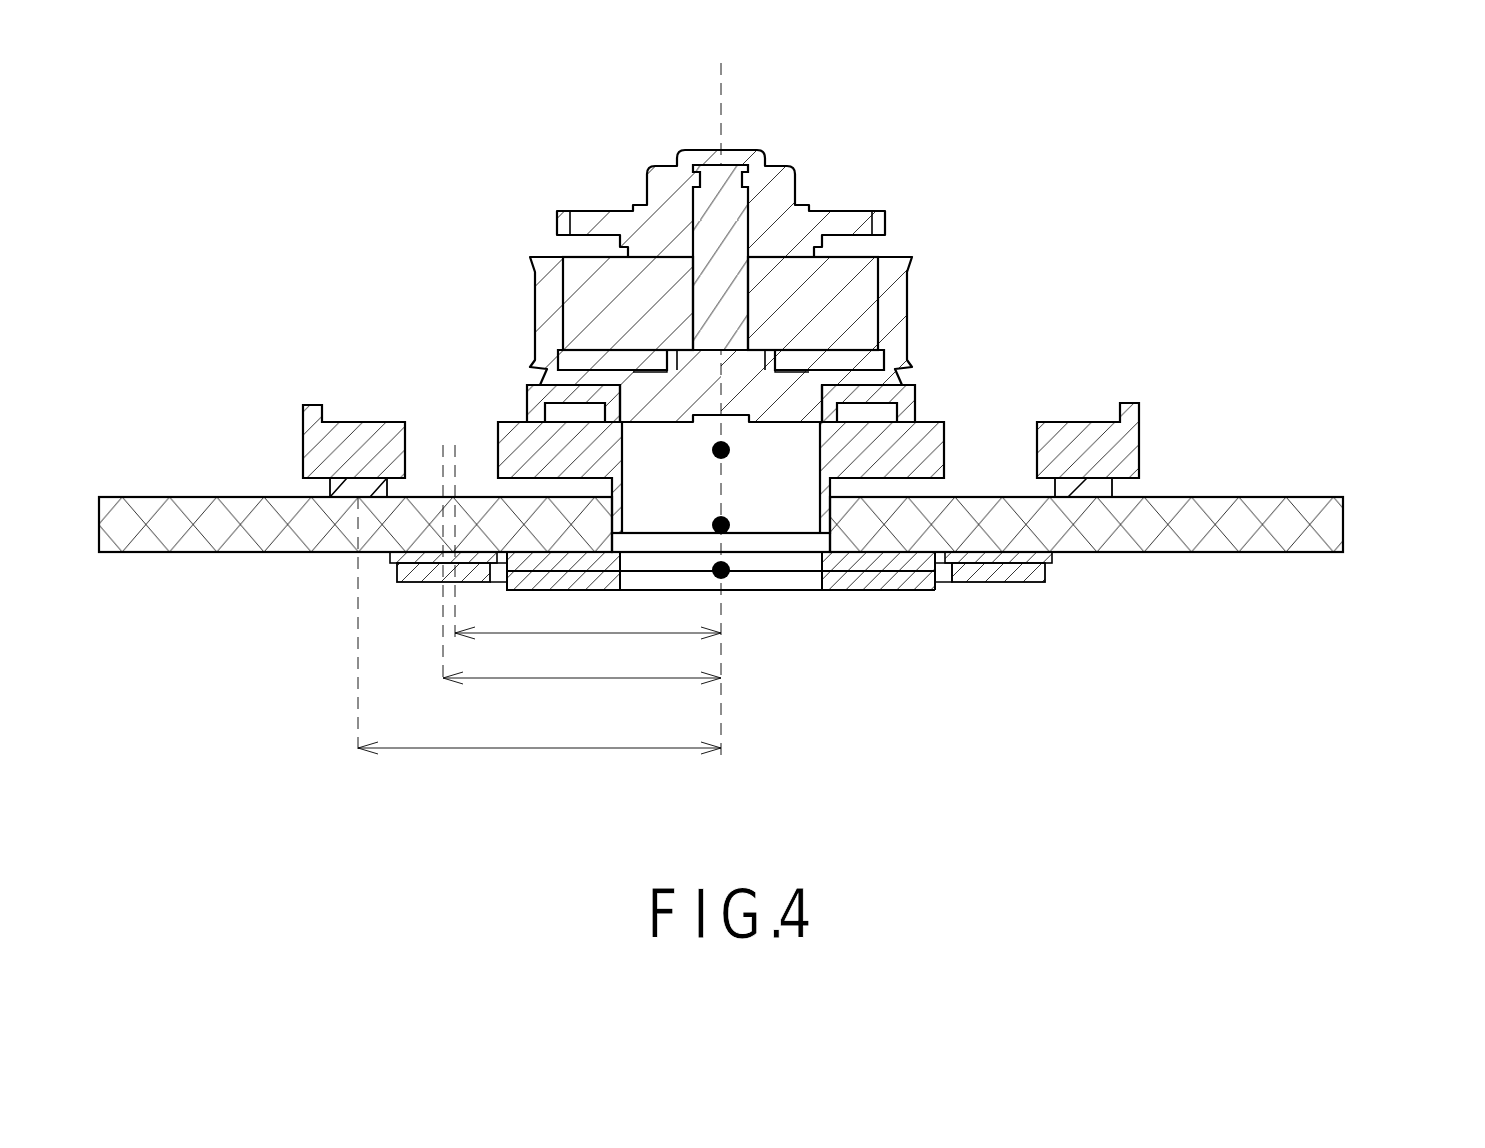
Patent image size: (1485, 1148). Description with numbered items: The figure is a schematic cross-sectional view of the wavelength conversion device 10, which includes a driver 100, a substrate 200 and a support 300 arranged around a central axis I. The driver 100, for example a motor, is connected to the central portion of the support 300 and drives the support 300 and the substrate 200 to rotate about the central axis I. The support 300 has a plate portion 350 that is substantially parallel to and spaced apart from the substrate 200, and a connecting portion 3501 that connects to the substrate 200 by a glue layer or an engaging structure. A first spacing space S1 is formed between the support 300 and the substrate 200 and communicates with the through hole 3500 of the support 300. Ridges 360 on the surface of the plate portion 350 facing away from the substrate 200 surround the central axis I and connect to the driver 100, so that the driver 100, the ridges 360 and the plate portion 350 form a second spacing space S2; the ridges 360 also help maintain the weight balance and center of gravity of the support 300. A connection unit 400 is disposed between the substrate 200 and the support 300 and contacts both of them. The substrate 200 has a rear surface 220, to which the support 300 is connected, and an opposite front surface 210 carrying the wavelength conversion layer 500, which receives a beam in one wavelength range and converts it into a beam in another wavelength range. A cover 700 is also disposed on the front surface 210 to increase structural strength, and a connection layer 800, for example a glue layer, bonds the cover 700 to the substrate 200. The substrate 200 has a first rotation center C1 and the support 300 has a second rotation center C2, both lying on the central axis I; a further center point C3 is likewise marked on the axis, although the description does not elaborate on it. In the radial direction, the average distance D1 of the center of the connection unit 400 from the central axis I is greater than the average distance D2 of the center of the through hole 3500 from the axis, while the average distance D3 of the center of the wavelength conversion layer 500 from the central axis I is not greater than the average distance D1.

The wavelength conversion device 10 is at (193, 123).
The central axis I is at (722, 83).
The driver 100 is at (910, 297).
The connection layer 800 is at (918, 391).
The ridge 360 is at (528, 412).
The through hole 3500 is at (428, 440).
The connecting portion 3501 is at (587, 572).
The substrate 200 is at (1366, 531).
The rear surface 220 is at (1323, 495).
The front surface 210 is at (1318, 556).
The cover 700 is at (919, 580).
The wavelength conversion layer 500 is at (1022, 573).
The connection unit 400 is at (330, 490).
The support 300 is at (1125, 394).
The plate portion 350 is at (1101, 440).
The first spacing space S1 is at (982, 488).
The second spacing space S2 is at (870, 412).
The first rotation center C1 is at (733, 527).
The second rotation center C2 is at (733, 452).
The third center point C3 is at (729, 575).
The average distance of the connection unit D1 is at (539, 644).
The average distance of the through hole D2 is at (588, 561).
The average distance of the wavelength conversion layer D3 is at (582, 585).